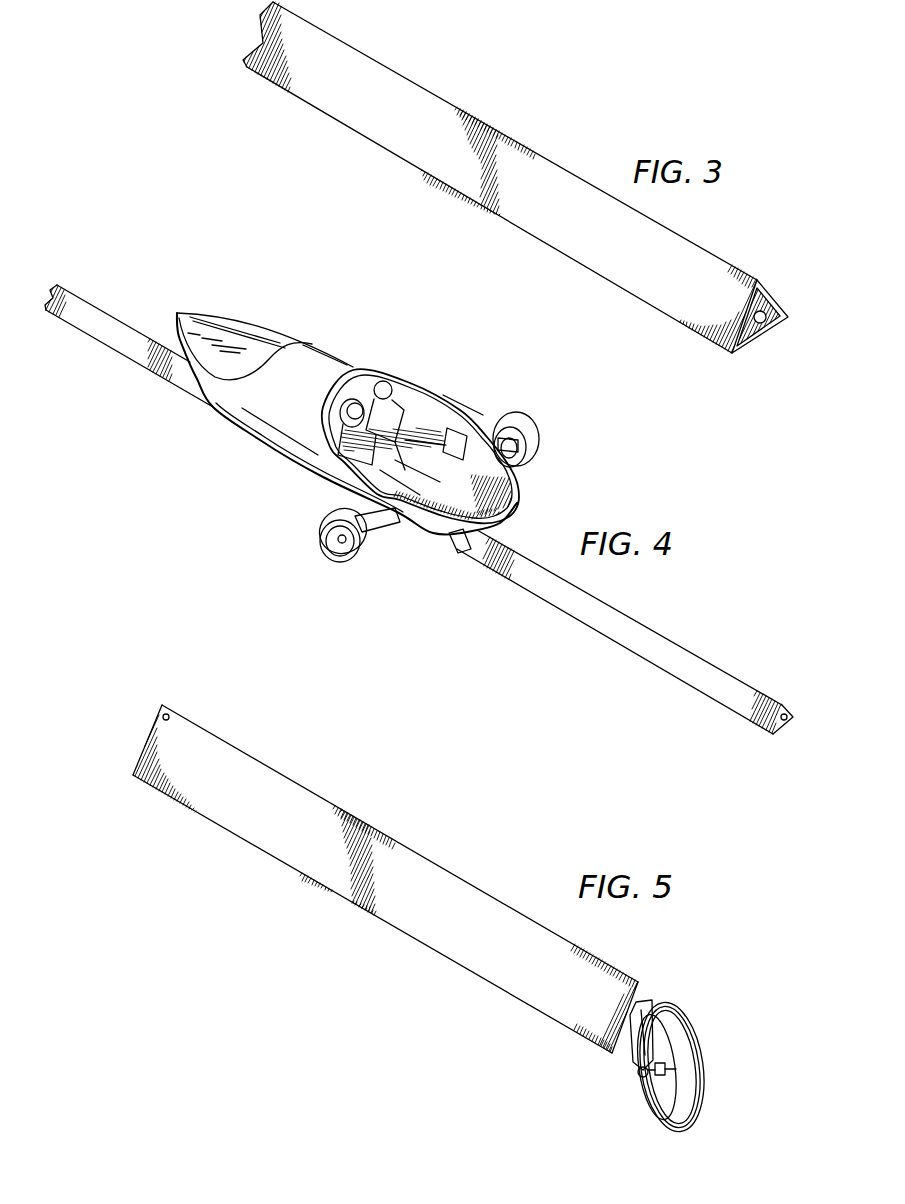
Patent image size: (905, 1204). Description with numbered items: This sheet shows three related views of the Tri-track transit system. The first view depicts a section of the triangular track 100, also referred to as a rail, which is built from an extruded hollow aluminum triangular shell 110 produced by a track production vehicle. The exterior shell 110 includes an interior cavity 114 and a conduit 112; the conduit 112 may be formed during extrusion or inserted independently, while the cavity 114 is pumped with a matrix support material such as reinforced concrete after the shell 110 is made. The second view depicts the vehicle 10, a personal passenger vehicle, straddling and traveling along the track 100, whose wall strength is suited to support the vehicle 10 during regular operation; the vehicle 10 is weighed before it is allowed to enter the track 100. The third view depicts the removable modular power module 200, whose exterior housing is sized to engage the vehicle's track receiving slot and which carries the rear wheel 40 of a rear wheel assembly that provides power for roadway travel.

In FIG. 4, the vehicle 10 is at (462, 404).
In FIG. 5, the rear wheel 40 is at (663, 1130).
In FIG. 3, the triangular track 100 is at (365, 138).
In FIG. 4, the triangular track 100 is at (579, 620).
In FIG. 3, the extruded triangular shell 110 is at (620, 282).
In FIG. 3, the conduit 112 is at (752, 311).
In FIG. 3, the interior cavity 114 is at (763, 298).
In FIG. 5, the modular power module 200 is at (240, 838).